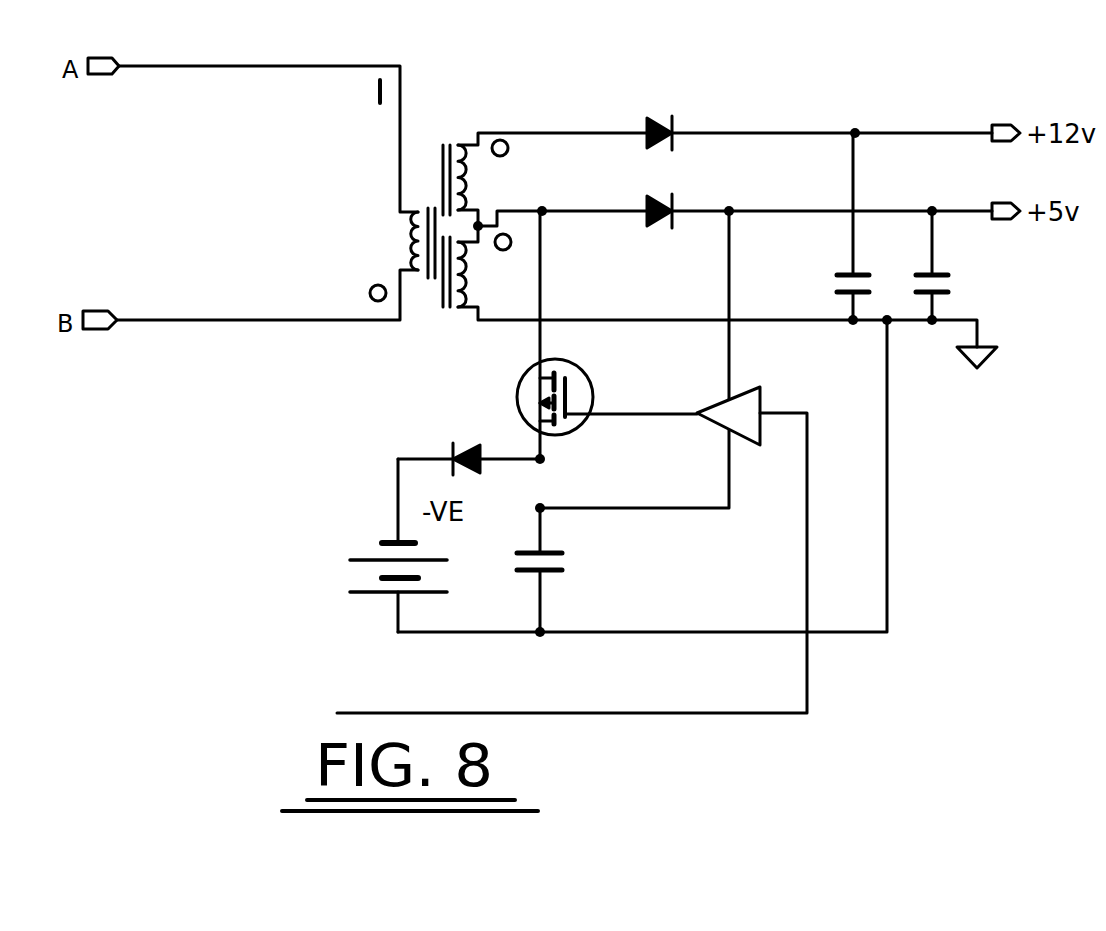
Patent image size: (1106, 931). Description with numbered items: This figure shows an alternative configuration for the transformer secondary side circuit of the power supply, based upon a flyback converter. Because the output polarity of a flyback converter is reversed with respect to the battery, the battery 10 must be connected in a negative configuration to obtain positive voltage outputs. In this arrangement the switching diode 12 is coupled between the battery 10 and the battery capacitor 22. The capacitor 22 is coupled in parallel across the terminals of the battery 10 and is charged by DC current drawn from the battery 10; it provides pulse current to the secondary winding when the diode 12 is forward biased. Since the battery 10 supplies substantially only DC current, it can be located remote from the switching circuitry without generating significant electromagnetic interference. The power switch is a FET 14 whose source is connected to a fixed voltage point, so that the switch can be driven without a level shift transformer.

The battery 10 is at (387, 600).
The switching diode 12 is at (463, 450).
The FET 14 is at (578, 392).
The battery capacitor 22 is at (567, 567).